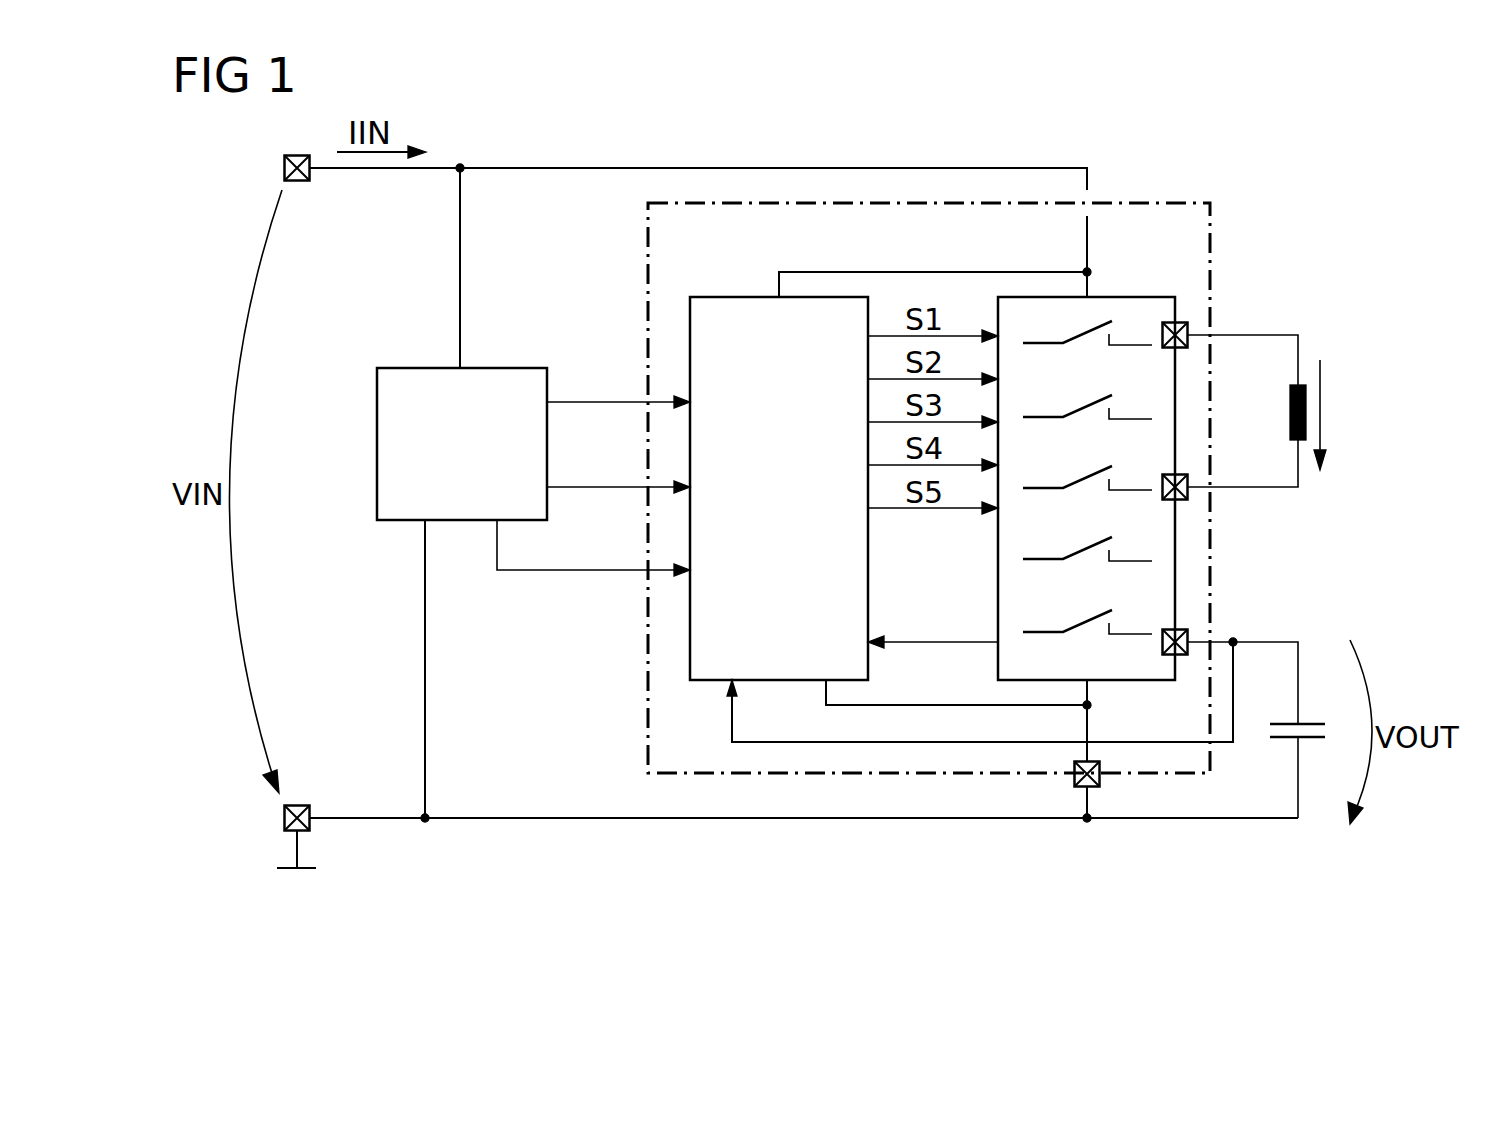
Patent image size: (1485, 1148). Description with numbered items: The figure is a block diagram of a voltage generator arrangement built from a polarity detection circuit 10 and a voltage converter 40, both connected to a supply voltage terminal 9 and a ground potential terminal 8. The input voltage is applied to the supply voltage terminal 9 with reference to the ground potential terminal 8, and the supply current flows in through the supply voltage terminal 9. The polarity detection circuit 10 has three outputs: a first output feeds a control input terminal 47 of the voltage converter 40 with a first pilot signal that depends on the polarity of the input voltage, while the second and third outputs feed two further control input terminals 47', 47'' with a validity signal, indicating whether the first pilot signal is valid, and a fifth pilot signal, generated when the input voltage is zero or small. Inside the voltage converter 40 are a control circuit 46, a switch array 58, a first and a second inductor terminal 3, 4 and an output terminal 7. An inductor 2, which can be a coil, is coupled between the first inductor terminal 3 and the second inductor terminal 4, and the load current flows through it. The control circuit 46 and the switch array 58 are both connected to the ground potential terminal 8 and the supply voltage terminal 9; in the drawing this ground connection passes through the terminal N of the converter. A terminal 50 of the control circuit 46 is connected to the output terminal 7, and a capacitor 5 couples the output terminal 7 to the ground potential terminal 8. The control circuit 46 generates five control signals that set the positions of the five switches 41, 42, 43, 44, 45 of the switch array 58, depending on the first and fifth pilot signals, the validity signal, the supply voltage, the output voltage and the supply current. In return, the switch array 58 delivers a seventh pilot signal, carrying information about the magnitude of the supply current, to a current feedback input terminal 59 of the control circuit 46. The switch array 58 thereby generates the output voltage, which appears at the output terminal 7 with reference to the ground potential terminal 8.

The inductor 2 is at (1290, 416).
The first inductor terminal 3 is at (1212, 336).
The second inductor terminal 4 is at (1210, 488).
The capacitor 5 is at (1310, 724).
The output terminal 7 is at (1212, 644).
The ground potential terminal 8 is at (296, 805).
The supply voltage terminal 9 is at (297, 181).
The polarity detection circuit 10 is at (377, 445).
The voltage converter 40 is at (648, 272).
The switch 41 is at (1090, 334).
The switch 42 is at (1087, 406).
The switch 43 is at (1087, 476).
The switch 44 is at (1087, 546).
The switch 45 is at (1087, 618).
The control circuit 46 is at (728, 297).
The control input terminal 47 is at (618, 409).
The control input terminal 47' is at (618, 493).
The control input terminal 47'' is at (593, 568).
The terminal of the control circuit 50 is at (728, 686).
The switch array 58 is at (1136, 297).
The current feedback input terminal 59 is at (872, 648).
The neutral terminal N is at (1101, 792).